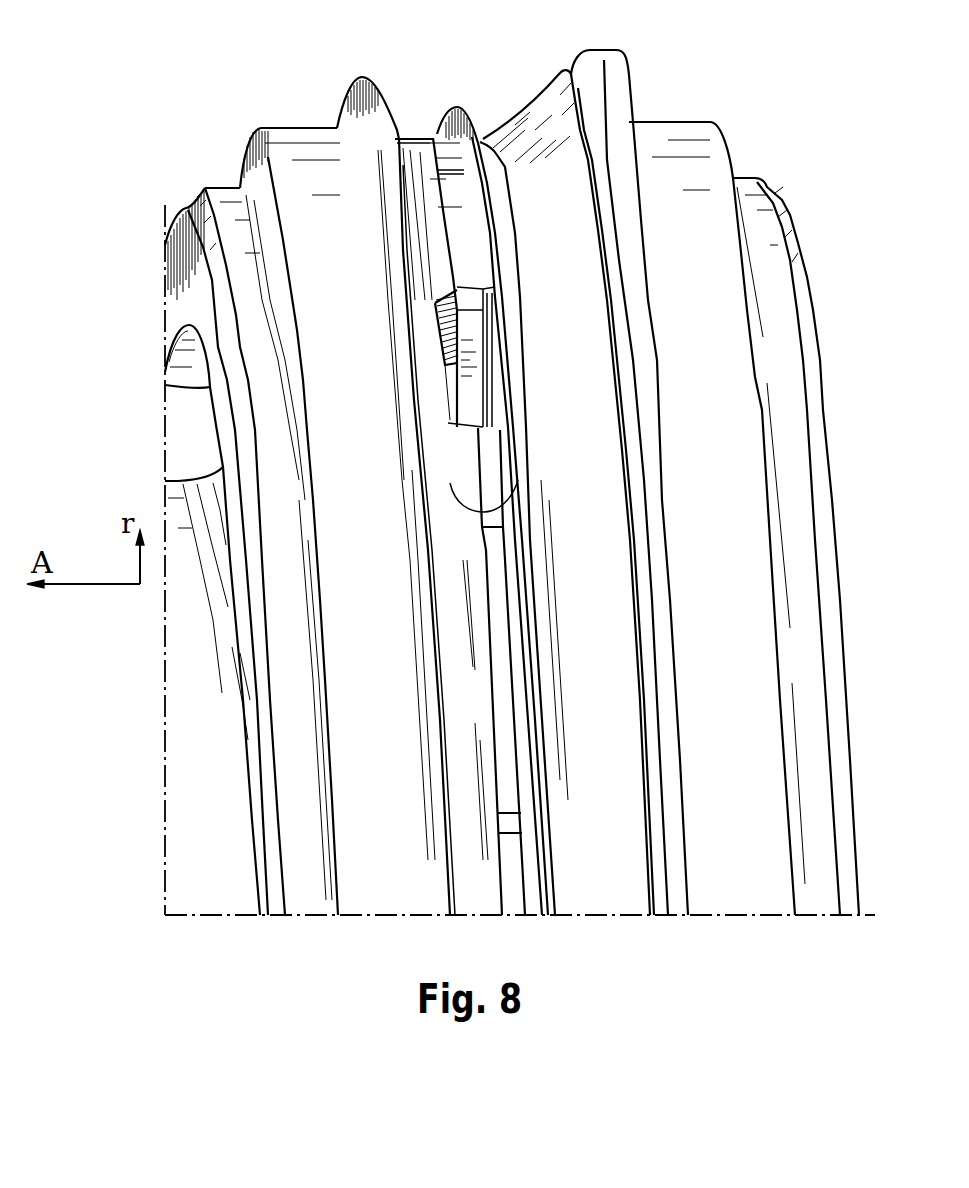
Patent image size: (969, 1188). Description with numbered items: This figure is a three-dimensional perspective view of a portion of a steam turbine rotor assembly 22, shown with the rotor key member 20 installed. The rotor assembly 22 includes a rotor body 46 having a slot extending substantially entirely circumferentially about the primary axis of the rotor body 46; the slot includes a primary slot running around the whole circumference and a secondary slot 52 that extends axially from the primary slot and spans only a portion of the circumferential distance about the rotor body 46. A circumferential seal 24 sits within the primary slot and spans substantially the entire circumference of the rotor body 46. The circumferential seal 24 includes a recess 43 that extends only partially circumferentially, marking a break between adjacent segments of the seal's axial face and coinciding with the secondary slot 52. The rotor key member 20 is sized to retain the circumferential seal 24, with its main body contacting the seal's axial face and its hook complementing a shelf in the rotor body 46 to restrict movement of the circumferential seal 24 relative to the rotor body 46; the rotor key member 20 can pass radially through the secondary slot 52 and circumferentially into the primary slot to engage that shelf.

The rotor key member 20 is at (457, 226).
The rotor assembly 22 is at (111, 213).
The circumferential seal 24 is at (601, 415).
The recess 43 is at (507, 478).
The rotor body 46 is at (342, 341).
The secondary slot 52 is at (469, 477).